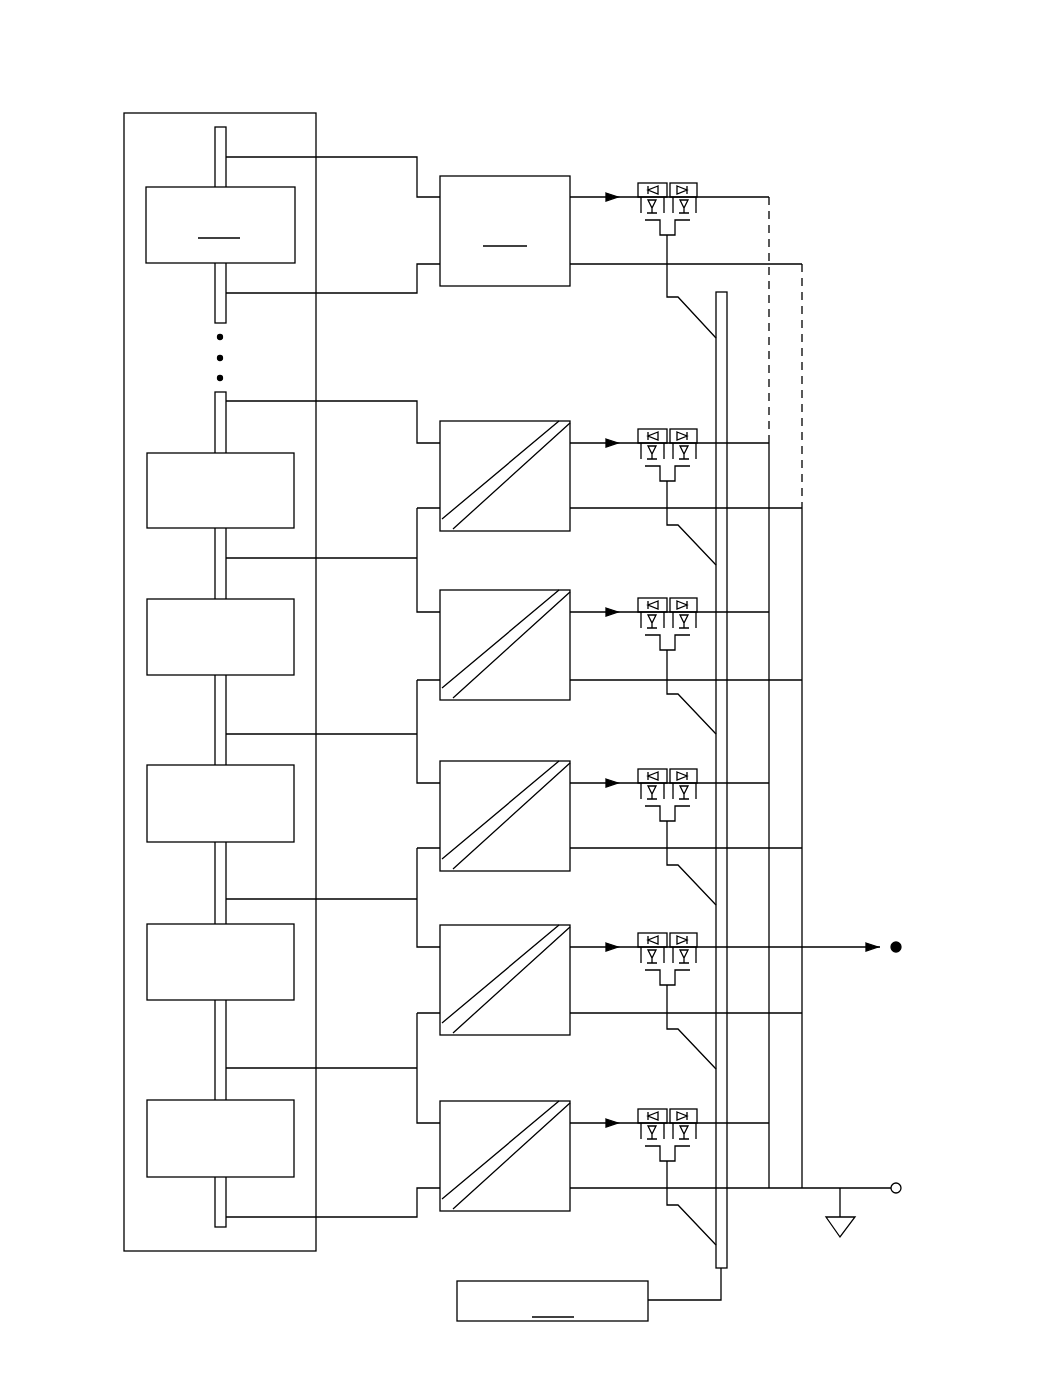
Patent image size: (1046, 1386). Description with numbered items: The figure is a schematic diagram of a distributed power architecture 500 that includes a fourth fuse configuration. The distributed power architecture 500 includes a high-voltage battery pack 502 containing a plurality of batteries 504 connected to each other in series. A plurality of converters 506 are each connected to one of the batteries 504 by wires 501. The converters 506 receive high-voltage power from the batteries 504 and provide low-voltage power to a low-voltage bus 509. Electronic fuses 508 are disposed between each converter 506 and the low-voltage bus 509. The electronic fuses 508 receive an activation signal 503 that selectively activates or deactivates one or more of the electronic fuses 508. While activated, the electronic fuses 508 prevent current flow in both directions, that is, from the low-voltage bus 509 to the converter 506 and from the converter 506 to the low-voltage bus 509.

The distributed power architecture 500 is at (148, 30).
The wires 501 is at (230, 304).
The high-voltage battery pack 502 is at (290, 95).
The activation signal 503 is at (552, 1301).
The batteries 504 is at (220, 225).
The converters 506 is at (505, 231).
The electronic fuses 508 is at (682, 166).
The low-voltage bus 509 is at (903, 922).